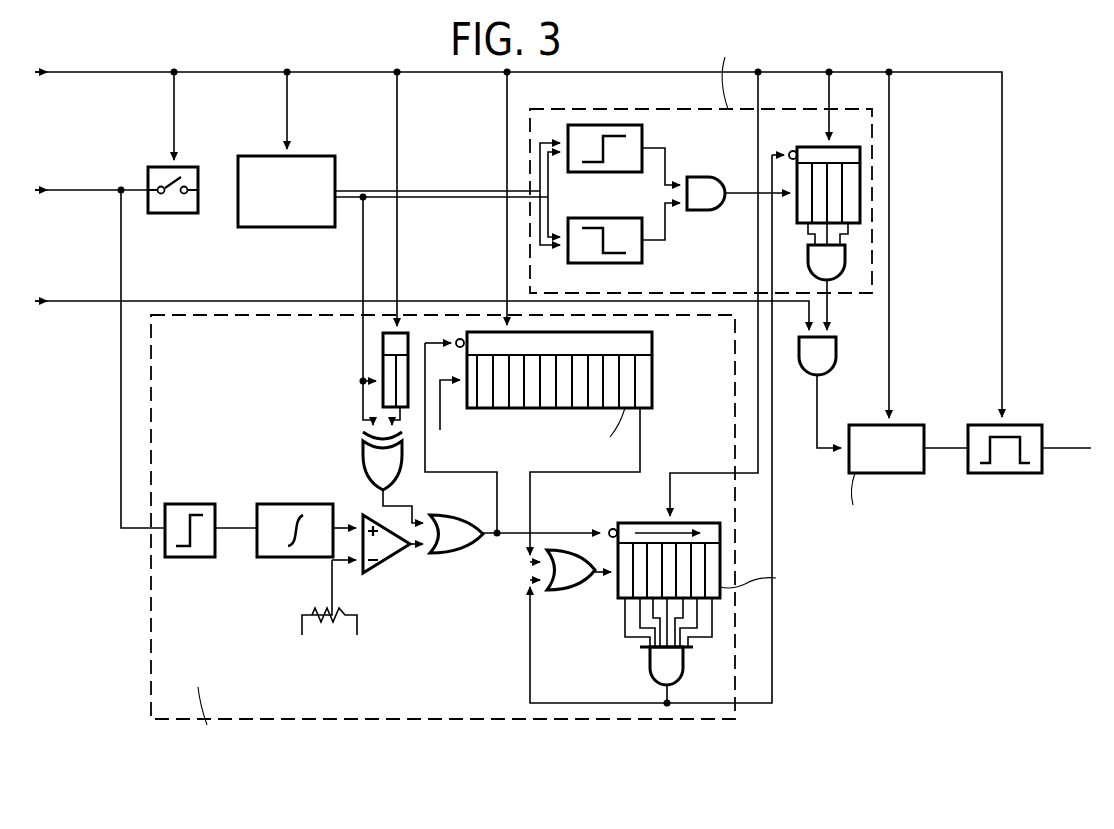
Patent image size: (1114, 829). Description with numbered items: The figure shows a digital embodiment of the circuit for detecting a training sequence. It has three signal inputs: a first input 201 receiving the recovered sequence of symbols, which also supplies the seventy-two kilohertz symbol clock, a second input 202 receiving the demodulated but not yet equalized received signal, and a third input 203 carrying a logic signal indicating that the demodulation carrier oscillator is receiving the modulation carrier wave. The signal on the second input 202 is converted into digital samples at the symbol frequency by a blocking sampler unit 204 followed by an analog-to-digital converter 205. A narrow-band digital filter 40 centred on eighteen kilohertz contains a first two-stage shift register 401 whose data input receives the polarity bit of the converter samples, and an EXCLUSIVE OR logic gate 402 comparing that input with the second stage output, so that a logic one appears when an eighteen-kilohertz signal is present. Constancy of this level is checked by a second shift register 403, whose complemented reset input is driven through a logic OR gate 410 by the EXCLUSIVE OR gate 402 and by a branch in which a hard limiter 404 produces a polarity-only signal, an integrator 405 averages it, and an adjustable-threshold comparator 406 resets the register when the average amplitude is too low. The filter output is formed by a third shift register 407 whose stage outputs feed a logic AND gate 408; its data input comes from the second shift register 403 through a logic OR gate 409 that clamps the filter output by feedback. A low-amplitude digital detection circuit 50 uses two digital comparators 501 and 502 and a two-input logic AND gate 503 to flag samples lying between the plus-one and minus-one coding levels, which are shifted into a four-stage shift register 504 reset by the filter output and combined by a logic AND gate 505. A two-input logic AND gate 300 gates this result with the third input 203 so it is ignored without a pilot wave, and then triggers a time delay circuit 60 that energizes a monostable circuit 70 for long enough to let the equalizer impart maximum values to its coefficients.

The first input 201 is at (58, 72).
The second input 202 is at (58, 190).
The third input 203 is at (55, 301).
The blocking sampler unit 204 is at (163, 214).
The analog-to-digital converter 205 is at (278, 228).
The narrow-band digital filter 40 is at (151, 656).
The first two-stage shift register 401 is at (383, 354).
The EXCLUSIVE OR logic gate 402 is at (368, 470).
The second shift register 403 is at (556, 408).
The hard limiter 404 is at (180, 504).
The integrator 405 is at (290, 504).
The adjustable-threshold comparator 406 is at (385, 562).
The third shift register 407 is at (650, 523).
The logic AND gate 408 is at (650, 672).
The logic OR gate 409 is at (560, 590).
The logic OR gate 410 is at (460, 556).
The low-amplitude digital detection circuit 50 is at (710, 109).
The digital comparator 501 is at (604, 172).
The digital comparator 502 is at (608, 218).
The two-input logic AND gate 503 is at (700, 211).
The four-stage shift register 504 is at (860, 190).
The logic AND gate 505 is at (845, 259).
The two-input logic AND gate 300 is at (836, 350).
The time delay circuit 60 is at (870, 473).
The monostable circuit 70 is at (998, 473).